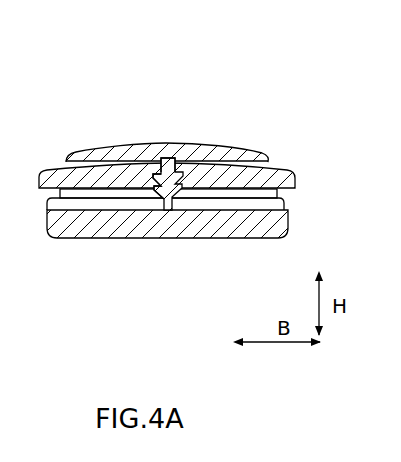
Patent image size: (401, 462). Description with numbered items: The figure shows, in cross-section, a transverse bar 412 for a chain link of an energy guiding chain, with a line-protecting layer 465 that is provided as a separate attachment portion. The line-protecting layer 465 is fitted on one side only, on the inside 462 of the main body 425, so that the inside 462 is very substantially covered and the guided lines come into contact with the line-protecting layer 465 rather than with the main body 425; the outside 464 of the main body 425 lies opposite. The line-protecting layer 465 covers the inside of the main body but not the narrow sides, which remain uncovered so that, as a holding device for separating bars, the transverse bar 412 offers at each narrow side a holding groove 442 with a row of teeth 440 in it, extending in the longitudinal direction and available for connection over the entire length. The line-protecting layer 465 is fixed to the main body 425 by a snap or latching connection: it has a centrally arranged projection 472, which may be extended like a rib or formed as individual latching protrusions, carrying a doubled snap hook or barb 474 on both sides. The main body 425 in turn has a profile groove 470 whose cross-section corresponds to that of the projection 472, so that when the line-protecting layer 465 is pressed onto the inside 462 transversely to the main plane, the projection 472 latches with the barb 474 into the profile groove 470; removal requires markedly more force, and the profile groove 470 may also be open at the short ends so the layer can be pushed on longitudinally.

The transverse bar 412 is at (193, 169).
The main body 425 is at (85, 228).
The row of teeth 440 is at (284, 208).
The holding groove 442 is at (277, 195).
The inside 462 is at (246, 143).
The outside 464 is at (193, 226).
The line-protecting layer 465 is at (156, 163).
The profile groove 470 is at (193, 191).
The projection 472 is at (160, 203).
The barb 474 is at (179, 166).